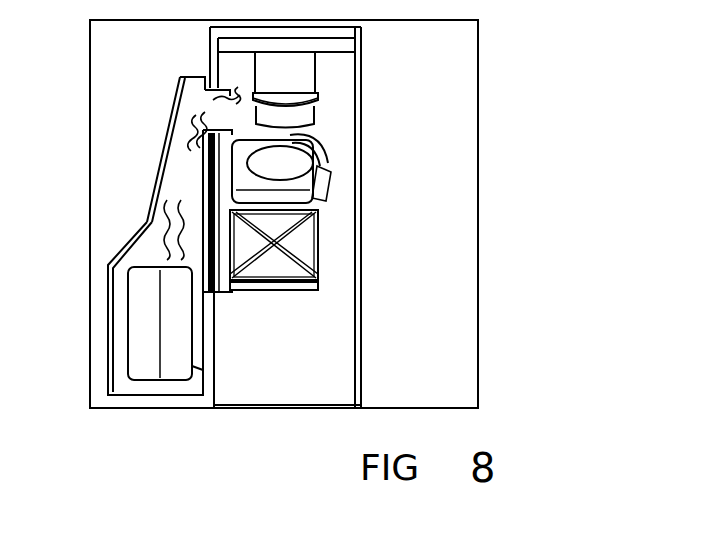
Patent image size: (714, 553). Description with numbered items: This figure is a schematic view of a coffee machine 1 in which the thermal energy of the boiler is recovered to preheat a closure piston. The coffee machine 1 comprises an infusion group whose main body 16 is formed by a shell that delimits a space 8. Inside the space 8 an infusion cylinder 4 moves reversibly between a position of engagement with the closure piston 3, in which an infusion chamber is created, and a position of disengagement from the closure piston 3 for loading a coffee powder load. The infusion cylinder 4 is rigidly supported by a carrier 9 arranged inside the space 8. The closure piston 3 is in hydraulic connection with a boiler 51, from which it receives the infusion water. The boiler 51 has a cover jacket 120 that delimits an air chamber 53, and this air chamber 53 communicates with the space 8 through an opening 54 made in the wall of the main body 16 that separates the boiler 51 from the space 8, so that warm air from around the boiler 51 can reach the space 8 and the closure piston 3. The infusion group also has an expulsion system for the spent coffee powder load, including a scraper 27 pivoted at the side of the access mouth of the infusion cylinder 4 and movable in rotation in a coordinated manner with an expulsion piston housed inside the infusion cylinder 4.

The coffee machine 1 is at (564, 224).
The closure piston 3 is at (306, 79).
The infusion cylinder 4 is at (293, 167).
The space 8 is at (343, 332).
The carrier 9 is at (249, 288).
The main body 16 is at (411, 350).
The scraper 27 is at (318, 140).
The boiler 51 is at (130, 333).
The air chamber 53 is at (178, 178).
The opening 54 is at (210, 100).
The cover jacket 120 is at (122, 247).